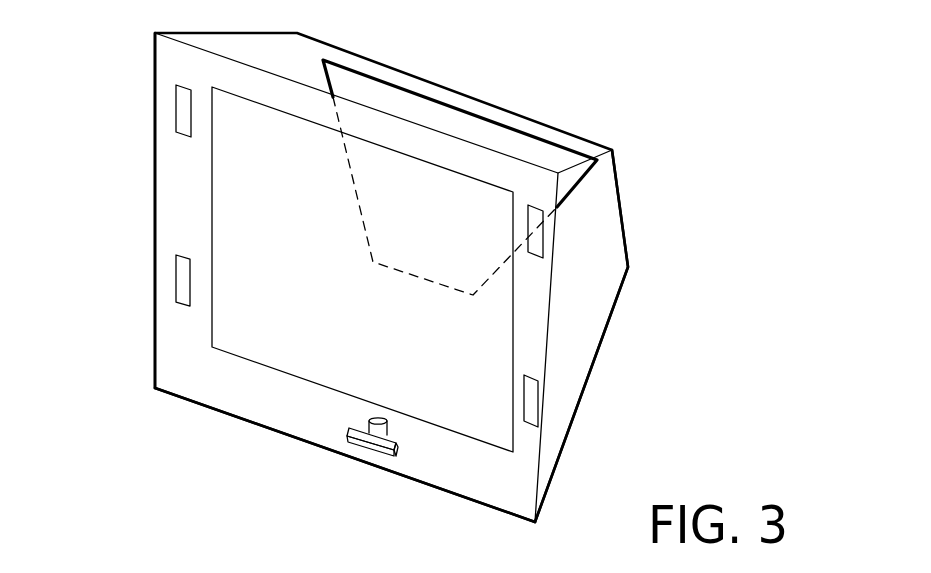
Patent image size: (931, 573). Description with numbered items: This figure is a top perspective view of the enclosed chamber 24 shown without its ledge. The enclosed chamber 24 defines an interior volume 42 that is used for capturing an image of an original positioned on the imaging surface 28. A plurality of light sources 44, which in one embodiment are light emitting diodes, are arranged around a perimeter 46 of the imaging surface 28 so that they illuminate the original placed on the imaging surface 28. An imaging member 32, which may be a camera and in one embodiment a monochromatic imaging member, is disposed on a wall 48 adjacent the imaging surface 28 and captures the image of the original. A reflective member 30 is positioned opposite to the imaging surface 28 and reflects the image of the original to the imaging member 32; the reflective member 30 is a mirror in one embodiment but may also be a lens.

The enclosed chamber 24 is at (598, 67).
The imaging surface 28 is at (185, 402).
The reflective member 30 is at (458, 120).
The imaging member 32 is at (368, 444).
The interior volume 42 is at (590, 328).
The light sources 44 is at (175, 273).
The perimeter 46 is at (154, 340).
The wall 48 is at (418, 452).